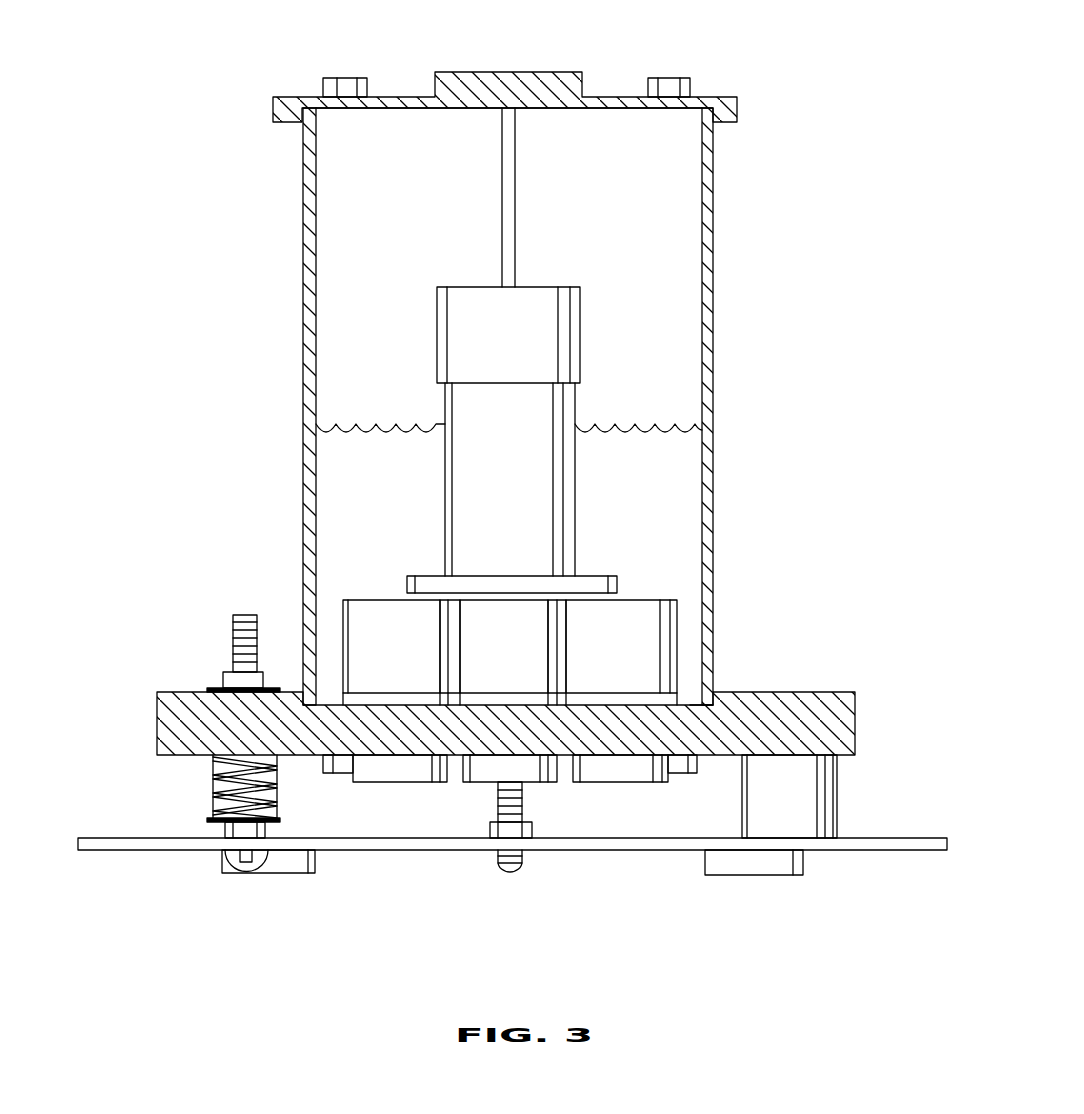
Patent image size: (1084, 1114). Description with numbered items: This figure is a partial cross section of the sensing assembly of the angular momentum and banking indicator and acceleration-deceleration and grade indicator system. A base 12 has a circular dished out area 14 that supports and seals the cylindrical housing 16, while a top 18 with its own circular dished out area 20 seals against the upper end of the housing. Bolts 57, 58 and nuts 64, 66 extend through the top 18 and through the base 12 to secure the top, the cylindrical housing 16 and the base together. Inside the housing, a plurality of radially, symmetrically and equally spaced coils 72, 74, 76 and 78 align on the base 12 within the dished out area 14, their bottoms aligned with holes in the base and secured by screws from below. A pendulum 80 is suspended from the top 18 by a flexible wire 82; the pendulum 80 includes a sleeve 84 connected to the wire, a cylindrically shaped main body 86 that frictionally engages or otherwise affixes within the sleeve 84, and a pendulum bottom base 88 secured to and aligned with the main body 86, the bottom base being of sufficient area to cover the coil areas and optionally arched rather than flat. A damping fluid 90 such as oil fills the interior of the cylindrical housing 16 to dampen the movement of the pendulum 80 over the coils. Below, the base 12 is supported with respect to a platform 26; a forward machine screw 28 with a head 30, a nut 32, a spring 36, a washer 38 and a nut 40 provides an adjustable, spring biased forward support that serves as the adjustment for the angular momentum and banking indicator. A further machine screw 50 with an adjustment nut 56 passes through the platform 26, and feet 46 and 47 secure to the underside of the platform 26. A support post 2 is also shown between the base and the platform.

The support post 2 is at (808, 808).
The base 12 is at (800, 700).
The circular dished out area 14 is at (692, 700).
The cylindrical housing 16 is at (708, 195).
The top 18 is at (730, 96).
The circular dished out area 20 is at (607, 109).
The platform 26 is at (888, 843).
The forward machine screw 28 is at (233, 617).
The head 30 is at (252, 860).
The nut 32 is at (225, 828).
The spring 36 is at (213, 770).
The washer 38 is at (220, 688).
The nut 40 is at (224, 676).
The foot 46 is at (293, 866).
The foot 47 is at (755, 866).
The machine screw 50 is at (525, 865).
The adjustment nut 56 is at (532, 833).
The bolt 57 is at (345, 79).
The bolt 58 is at (670, 79).
The nut 64 is at (342, 770).
The nut 66 is at (678, 768).
The coil 72 is at (391, 652).
The coil 74 is at (494, 652).
The coil 76 is at (612, 652).
The coil 78 is at (489, 620).
The pendulum 80 is at (600, 397).
The flexible wire 82 is at (510, 215).
The sleeve 84 is at (552, 328).
The main body 86 is at (543, 497).
The pendulum bottom base 88 is at (590, 582).
The damping fluid 90 is at (400, 428).